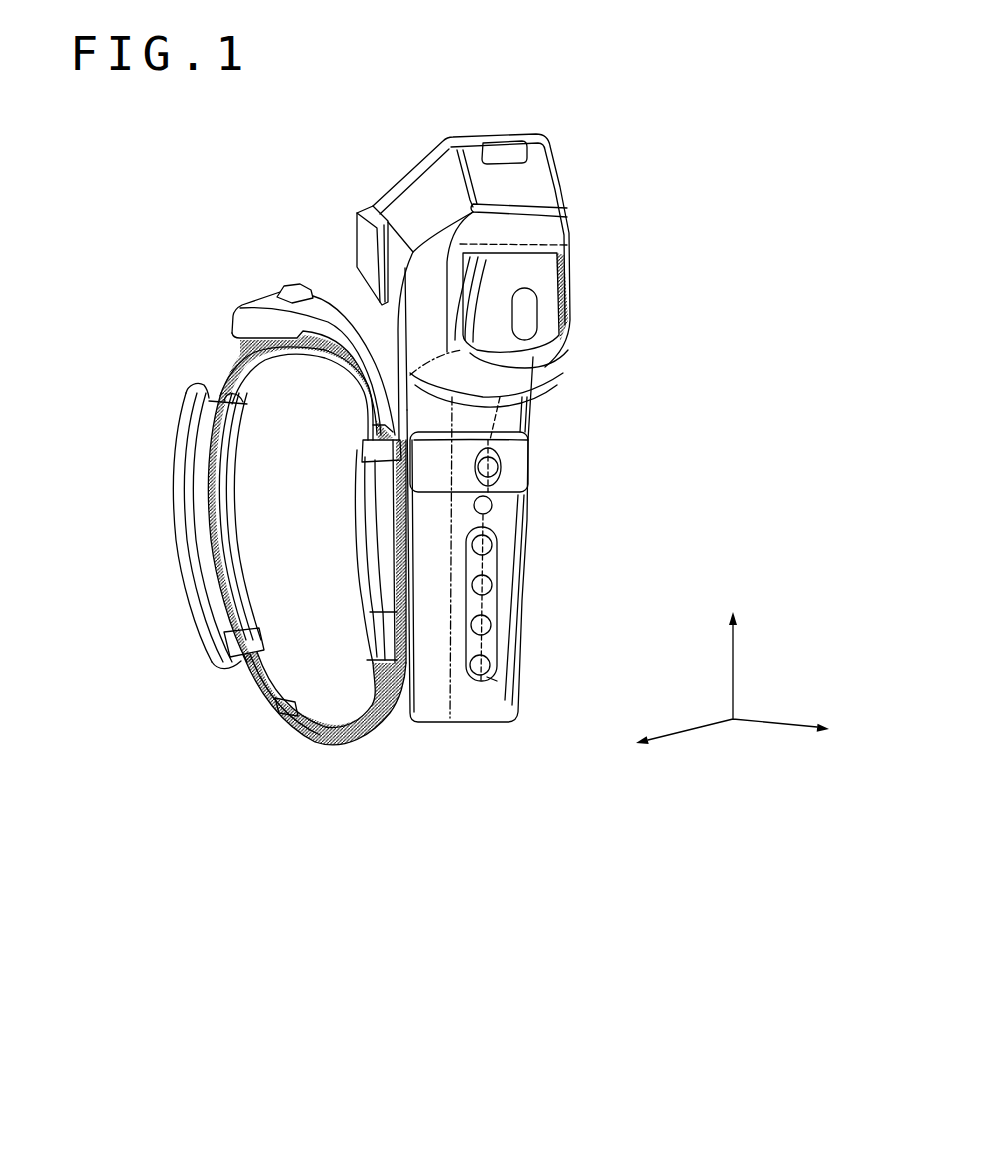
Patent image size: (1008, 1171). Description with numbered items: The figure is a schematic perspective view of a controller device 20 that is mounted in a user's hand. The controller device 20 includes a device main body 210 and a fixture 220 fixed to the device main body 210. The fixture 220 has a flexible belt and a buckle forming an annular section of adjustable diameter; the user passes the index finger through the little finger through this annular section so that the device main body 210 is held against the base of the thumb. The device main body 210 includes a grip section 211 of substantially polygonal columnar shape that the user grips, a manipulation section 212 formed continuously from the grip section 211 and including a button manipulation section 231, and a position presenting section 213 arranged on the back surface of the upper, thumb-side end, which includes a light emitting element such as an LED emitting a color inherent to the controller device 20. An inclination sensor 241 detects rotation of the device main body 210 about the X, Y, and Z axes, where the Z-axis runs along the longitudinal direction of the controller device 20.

The controller device 20 is at (184, 855).
The device main body 210 is at (481, 758).
The grip section 211 is at (533, 525).
The manipulation section 212 is at (621, 140).
The position presenting section 213 is at (504, 148).
The fixture 220 is at (190, 601).
The button manipulation section 231 is at (350, 206).
The inclination sensor 241 is at (532, 326).